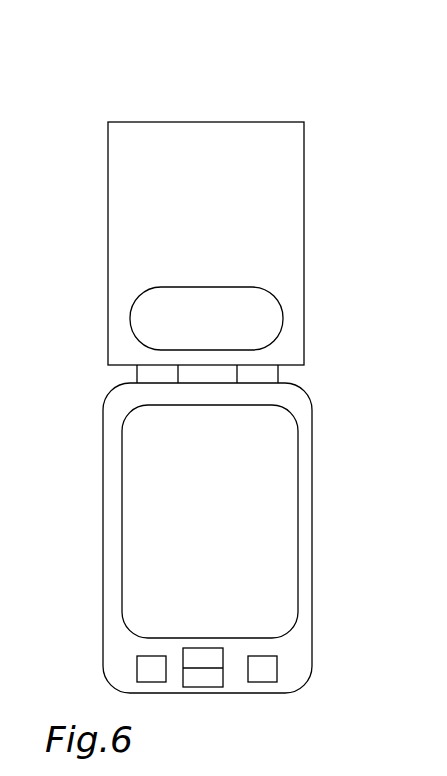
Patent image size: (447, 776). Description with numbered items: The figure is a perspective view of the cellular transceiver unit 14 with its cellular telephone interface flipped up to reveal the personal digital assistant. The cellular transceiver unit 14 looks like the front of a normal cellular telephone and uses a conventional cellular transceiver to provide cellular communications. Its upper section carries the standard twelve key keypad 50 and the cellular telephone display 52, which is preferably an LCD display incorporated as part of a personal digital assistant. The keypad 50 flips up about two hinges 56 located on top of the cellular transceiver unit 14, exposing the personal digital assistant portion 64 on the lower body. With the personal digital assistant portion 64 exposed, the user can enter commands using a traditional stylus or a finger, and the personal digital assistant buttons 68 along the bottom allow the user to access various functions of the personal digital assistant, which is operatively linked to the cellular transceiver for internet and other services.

The cellular transceiver unit 14 is at (353, 262).
The keypad 50 is at (210, 132).
The display 52 is at (191, 293).
The hinges 56 is at (137, 373).
The personal digital assistant portion 64 is at (312, 518).
The personal digital assistant buttons 68 is at (268, 656).